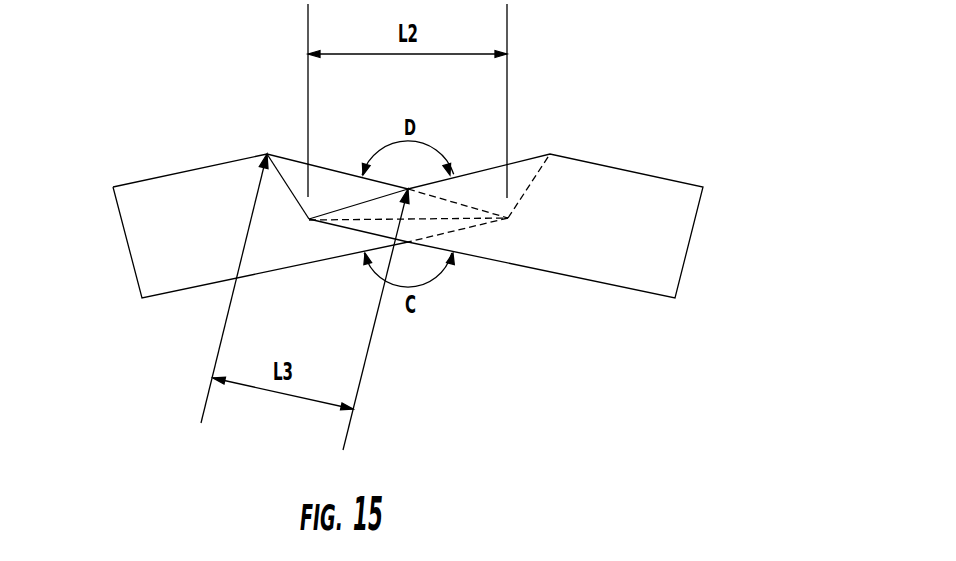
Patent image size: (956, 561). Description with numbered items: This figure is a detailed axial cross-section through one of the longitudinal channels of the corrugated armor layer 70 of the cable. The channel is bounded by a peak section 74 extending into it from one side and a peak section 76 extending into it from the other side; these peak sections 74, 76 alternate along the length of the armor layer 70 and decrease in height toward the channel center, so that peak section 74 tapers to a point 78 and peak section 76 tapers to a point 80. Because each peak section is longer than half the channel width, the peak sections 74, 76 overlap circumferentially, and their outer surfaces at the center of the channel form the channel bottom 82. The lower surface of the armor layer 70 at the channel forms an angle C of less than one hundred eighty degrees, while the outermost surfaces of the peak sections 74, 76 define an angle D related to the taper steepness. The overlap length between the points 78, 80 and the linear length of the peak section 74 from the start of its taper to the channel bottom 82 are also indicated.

The armor layer 70 is at (740, 150).
The peak section 74 is at (288, 158).
The peak section 76 is at (527, 176).
The point 78 is at (508, 219).
The point 80 is at (309, 219).
The channel bottom 82 is at (408, 189).